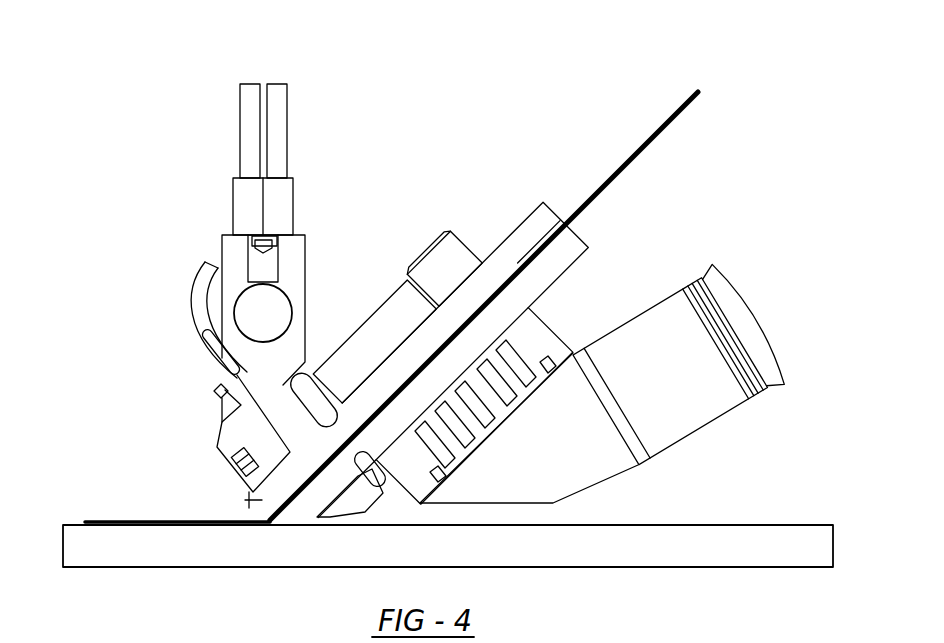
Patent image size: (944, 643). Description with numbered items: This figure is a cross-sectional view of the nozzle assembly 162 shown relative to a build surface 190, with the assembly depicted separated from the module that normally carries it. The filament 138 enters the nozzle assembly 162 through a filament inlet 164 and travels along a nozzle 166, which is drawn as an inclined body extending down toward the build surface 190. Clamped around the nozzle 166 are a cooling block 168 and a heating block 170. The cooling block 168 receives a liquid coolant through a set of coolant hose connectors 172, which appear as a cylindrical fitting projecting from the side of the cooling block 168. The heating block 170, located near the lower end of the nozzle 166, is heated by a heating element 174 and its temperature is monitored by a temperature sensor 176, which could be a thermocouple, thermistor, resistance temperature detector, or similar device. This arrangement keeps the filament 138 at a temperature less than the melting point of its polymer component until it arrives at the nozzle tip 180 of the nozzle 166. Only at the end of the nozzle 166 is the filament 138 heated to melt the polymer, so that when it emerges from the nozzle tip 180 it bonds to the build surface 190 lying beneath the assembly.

The filament 138 is at (648, 143).
The nozzle assembly 162 is at (441, 133).
The filament inlet 164 is at (525, 240).
The nozzle 166 is at (402, 355).
The cooling block 168 is at (523, 348).
The heating block 170 is at (352, 498).
The coolant hose connectors 172 is at (707, 408).
The heating element 174 is at (253, 310).
The temperature sensor 176 is at (247, 400).
The nozzle tip 180 is at (247, 502).
The build surface 190 is at (638, 550).